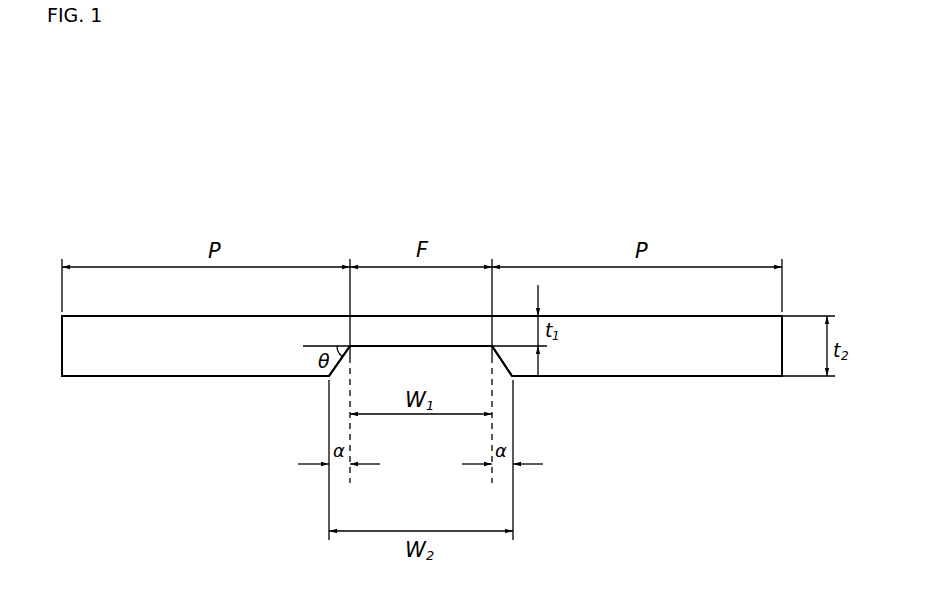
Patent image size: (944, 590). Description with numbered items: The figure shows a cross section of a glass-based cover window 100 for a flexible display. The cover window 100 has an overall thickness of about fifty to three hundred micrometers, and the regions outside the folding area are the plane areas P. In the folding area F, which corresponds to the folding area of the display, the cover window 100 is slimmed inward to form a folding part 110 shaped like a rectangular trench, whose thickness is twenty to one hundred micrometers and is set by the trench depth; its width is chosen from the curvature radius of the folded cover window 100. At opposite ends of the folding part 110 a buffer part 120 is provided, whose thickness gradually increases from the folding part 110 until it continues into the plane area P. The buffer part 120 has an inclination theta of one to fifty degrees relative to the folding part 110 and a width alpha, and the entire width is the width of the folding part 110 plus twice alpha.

The cover window 100 is at (174, 168).
The folding part 110 is at (407, 346).
The buffer part 120 is at (503, 352).